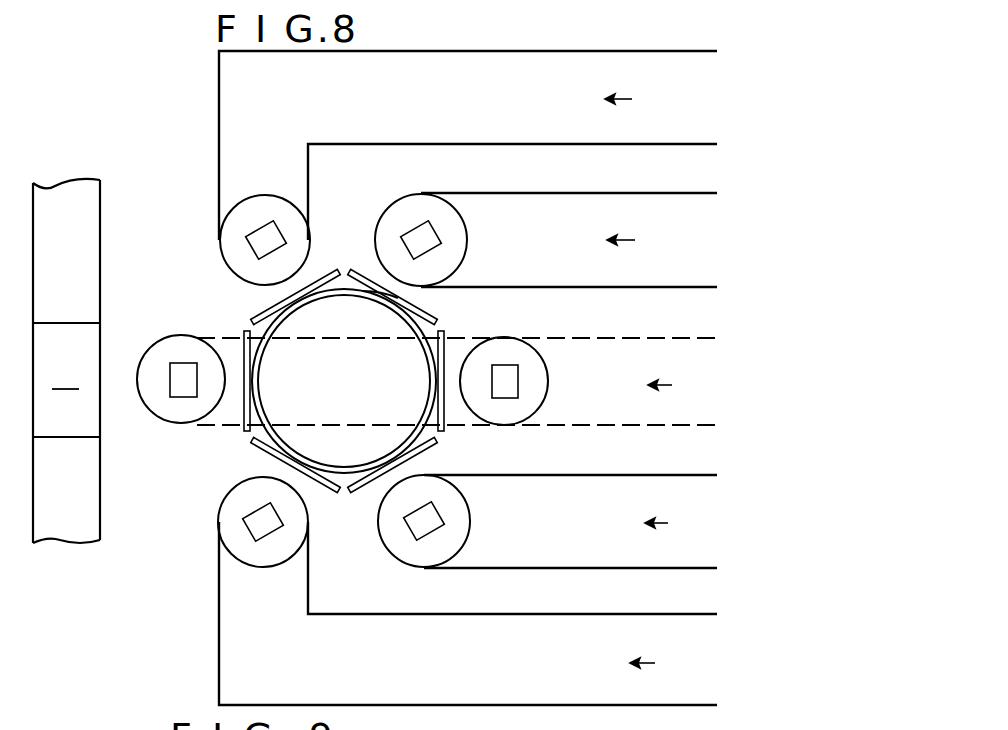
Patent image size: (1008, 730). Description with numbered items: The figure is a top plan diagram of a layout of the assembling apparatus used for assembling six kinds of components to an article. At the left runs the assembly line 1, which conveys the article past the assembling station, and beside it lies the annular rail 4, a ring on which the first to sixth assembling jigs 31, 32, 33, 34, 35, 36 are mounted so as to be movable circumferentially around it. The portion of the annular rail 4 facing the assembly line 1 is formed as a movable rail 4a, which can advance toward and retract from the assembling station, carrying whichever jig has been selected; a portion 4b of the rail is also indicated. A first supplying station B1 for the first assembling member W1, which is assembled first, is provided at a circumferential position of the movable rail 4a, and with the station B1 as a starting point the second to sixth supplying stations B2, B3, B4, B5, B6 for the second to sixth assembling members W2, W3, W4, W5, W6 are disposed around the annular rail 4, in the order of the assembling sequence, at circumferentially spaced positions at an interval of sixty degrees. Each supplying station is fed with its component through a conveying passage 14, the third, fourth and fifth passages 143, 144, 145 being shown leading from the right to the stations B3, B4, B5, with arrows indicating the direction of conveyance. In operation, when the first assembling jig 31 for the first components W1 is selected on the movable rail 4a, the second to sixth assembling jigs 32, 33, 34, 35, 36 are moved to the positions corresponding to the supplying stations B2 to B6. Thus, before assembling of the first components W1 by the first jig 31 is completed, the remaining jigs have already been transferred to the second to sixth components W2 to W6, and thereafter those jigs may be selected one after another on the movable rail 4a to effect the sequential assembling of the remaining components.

The assembly line 1 is at (92, 230).
The conveying passage 14 is at (504, 51).
The third conveying passage 143 is at (620, 194).
The fourth conveying passage 144 is at (630, 338).
The fifth conveying passage 145 is at (608, 569).
The annular rail 4 is at (326, 462).
The movable rail 4a is at (260, 384).
The rotary table rim portion 4b is at (396, 306).
The first assembling jig 31 is at (243, 432).
The second assembling jig 32 is at (256, 313).
The third assembling jig 33 is at (440, 320).
The fourth assembling jig 34 is at (445, 408).
The fifth assembling jig 35 is at (350, 498).
The sixth assembling jig 36 is at (318, 497).
The first supplying station B1 is at (170, 358).
The second supplying station B2 is at (289, 240).
The third supplying station B3 is at (412, 223).
The fourth supplying station B4 is at (509, 365).
The fifth supplying station B5 is at (422, 542).
The sixth supplying station B6 is at (231, 522).
The first assembling member W1 is at (183, 380).
The second assembling member W2 is at (266, 240).
The third assembling member W3 is at (421, 240).
The fourth assembling member W4 is at (505, 381).
The fifth assembling member W5 is at (424, 521).
The sixth assembling member W6 is at (263, 522).